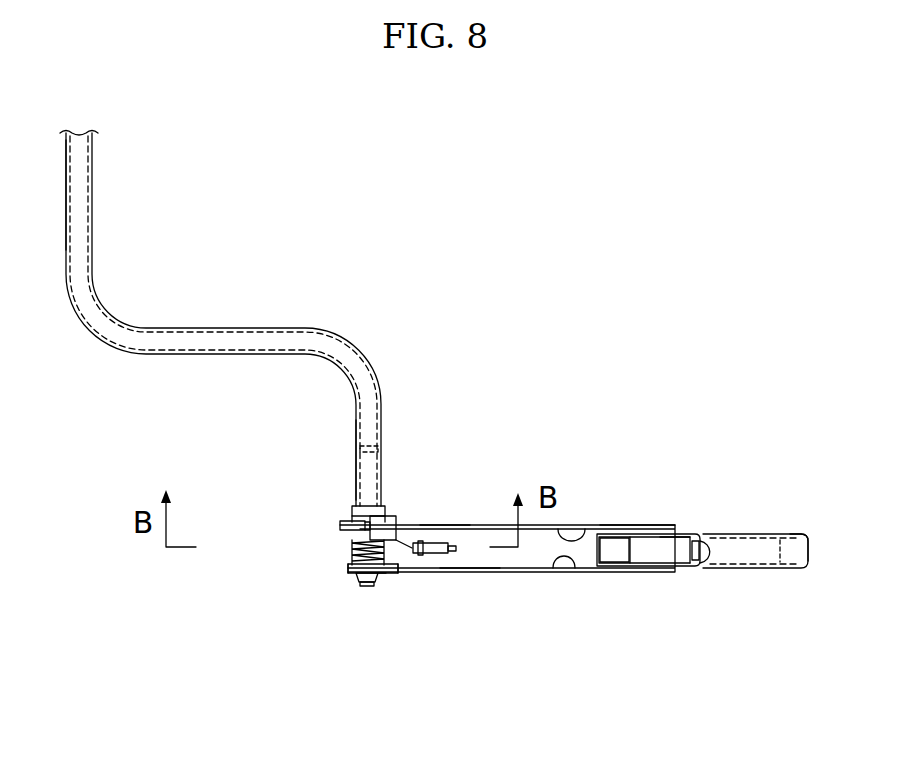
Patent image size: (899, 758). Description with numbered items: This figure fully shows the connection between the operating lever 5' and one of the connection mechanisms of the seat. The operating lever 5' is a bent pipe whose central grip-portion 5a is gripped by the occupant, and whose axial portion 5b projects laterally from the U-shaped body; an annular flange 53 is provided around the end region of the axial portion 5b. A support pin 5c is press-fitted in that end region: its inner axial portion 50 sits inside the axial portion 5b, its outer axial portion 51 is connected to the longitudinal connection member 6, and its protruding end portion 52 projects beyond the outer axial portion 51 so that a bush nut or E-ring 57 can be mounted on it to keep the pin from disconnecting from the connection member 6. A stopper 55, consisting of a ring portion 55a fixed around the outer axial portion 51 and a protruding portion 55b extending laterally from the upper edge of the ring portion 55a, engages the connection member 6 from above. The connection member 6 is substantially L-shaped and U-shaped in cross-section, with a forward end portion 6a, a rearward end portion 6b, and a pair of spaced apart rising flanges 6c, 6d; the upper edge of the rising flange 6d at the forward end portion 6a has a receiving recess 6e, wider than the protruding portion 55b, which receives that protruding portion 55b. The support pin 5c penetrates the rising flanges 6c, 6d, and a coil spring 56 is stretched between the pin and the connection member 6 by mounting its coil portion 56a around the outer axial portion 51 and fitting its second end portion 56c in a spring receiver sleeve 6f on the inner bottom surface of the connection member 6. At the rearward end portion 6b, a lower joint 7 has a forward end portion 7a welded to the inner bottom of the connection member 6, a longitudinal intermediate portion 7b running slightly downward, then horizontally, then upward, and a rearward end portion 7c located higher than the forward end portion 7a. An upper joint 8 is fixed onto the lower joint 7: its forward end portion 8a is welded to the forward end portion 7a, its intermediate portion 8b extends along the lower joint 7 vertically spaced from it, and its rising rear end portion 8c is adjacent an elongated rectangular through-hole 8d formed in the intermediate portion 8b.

The operating lever 5' is at (207, 319).
The grip-portion 5a is at (80, 197).
The axial portion 5b is at (368, 397).
The support pin 5c is at (368, 592).
The inner axial portion 50 is at (388, 472).
The outer axial portion 51 is at (350, 540).
The protruding end portion 52 is at (357, 578).
The annular flange 53 is at (358, 505).
The stopper 55 is at (390, 515).
The ring portion 55a is at (340, 522).
The protruding portion 55b is at (398, 530).
The coil spring 56 is at (355, 570).
The coil portion 56a is at (350, 560).
The second end portion 56c is at (398, 578).
The bush nut or E-ring 57 is at (386, 575).
The longitudinal connection member 6 is at (518, 577).
The forward end portion 6a is at (345, 523).
The rearward end portion 6b is at (650, 525).
The rising flange 6c is at (565, 568).
The rising flange 6d is at (585, 530).
The receiving recess 6e is at (352, 520).
The spring receiver sleeve 6f is at (443, 540).
The lower joint 7 is at (792, 577).
The forward end portion 7a is at (623, 538).
The longitudinal intermediate portion 7b is at (755, 545).
The rearward end portion 7c is at (795, 545).
The upper joint 8 is at (684, 578).
The forward end portion 8a is at (650, 568).
The intermediate portion 8b is at (683, 535).
The rear end portion 8c is at (708, 540).
The elongated through-hole 8d is at (706, 563).